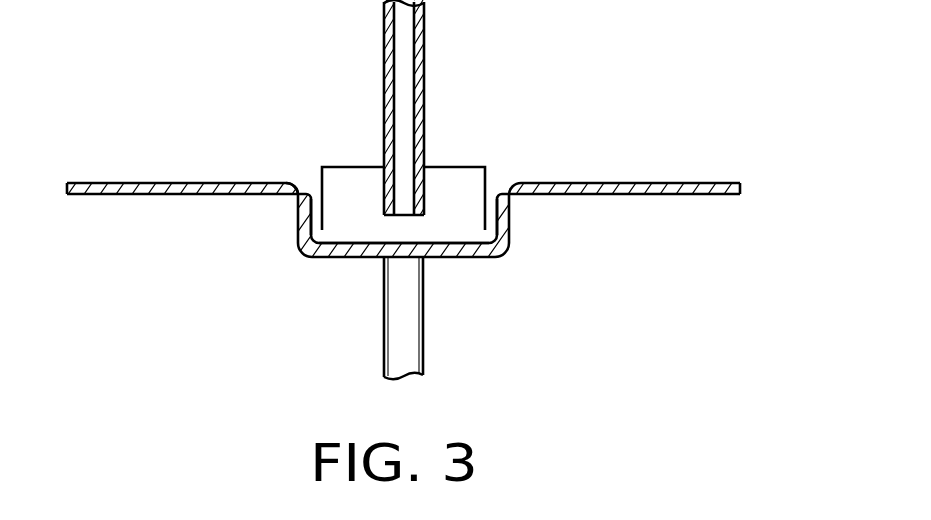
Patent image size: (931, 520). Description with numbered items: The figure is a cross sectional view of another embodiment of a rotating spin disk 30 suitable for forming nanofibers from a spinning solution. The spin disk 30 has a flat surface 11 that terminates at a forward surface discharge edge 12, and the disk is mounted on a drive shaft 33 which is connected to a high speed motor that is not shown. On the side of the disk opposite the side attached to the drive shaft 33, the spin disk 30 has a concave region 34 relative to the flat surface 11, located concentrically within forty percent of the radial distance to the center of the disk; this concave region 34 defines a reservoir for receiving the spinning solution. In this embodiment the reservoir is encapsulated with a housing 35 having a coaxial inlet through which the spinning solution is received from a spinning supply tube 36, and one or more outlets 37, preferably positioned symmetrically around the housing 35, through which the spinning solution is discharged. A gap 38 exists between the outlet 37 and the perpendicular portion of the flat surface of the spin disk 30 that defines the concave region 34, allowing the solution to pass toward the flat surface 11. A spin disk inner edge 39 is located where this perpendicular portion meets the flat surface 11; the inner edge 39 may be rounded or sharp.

The flat surface 11 is at (613, 182).
The forward surface discharge edge 12 is at (739, 182).
The rotating spin disk 30 is at (465, 150).
The drive shaft 33 is at (424, 298).
The concave region 34 is at (430, 232).
The housing 35 is at (477, 165).
The spinning supply tube 36 is at (383, 60).
The outlet 37 is at (492, 190).
The gap 38 is at (315, 190).
The spin disk inner edge 39 is at (300, 173).